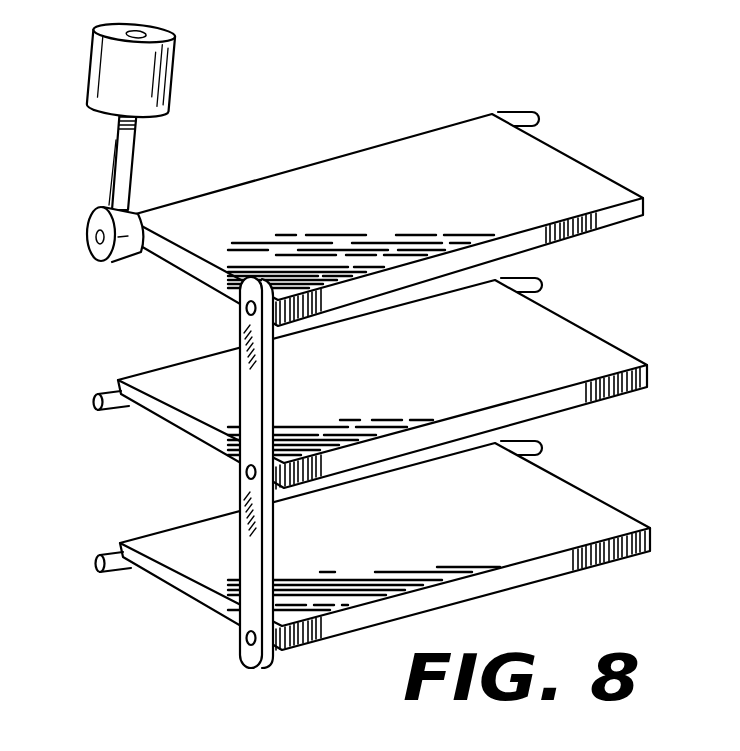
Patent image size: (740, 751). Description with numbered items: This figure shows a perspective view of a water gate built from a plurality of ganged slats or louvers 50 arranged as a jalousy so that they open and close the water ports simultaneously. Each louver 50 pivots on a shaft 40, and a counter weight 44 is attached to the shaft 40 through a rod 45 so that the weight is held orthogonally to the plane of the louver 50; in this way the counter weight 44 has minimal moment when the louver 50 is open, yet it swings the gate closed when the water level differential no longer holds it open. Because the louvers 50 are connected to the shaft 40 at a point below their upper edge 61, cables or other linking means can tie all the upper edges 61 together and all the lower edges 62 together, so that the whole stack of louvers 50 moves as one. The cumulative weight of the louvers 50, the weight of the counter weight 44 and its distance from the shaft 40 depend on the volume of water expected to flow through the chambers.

The shaft 40 is at (87, 239).
The counter weight 44 is at (172, 74).
The rod 45 is at (116, 163).
The louvers 50 is at (575, 178).
The upper edge 61 is at (383, 142).
The lower edge 62 is at (565, 233).